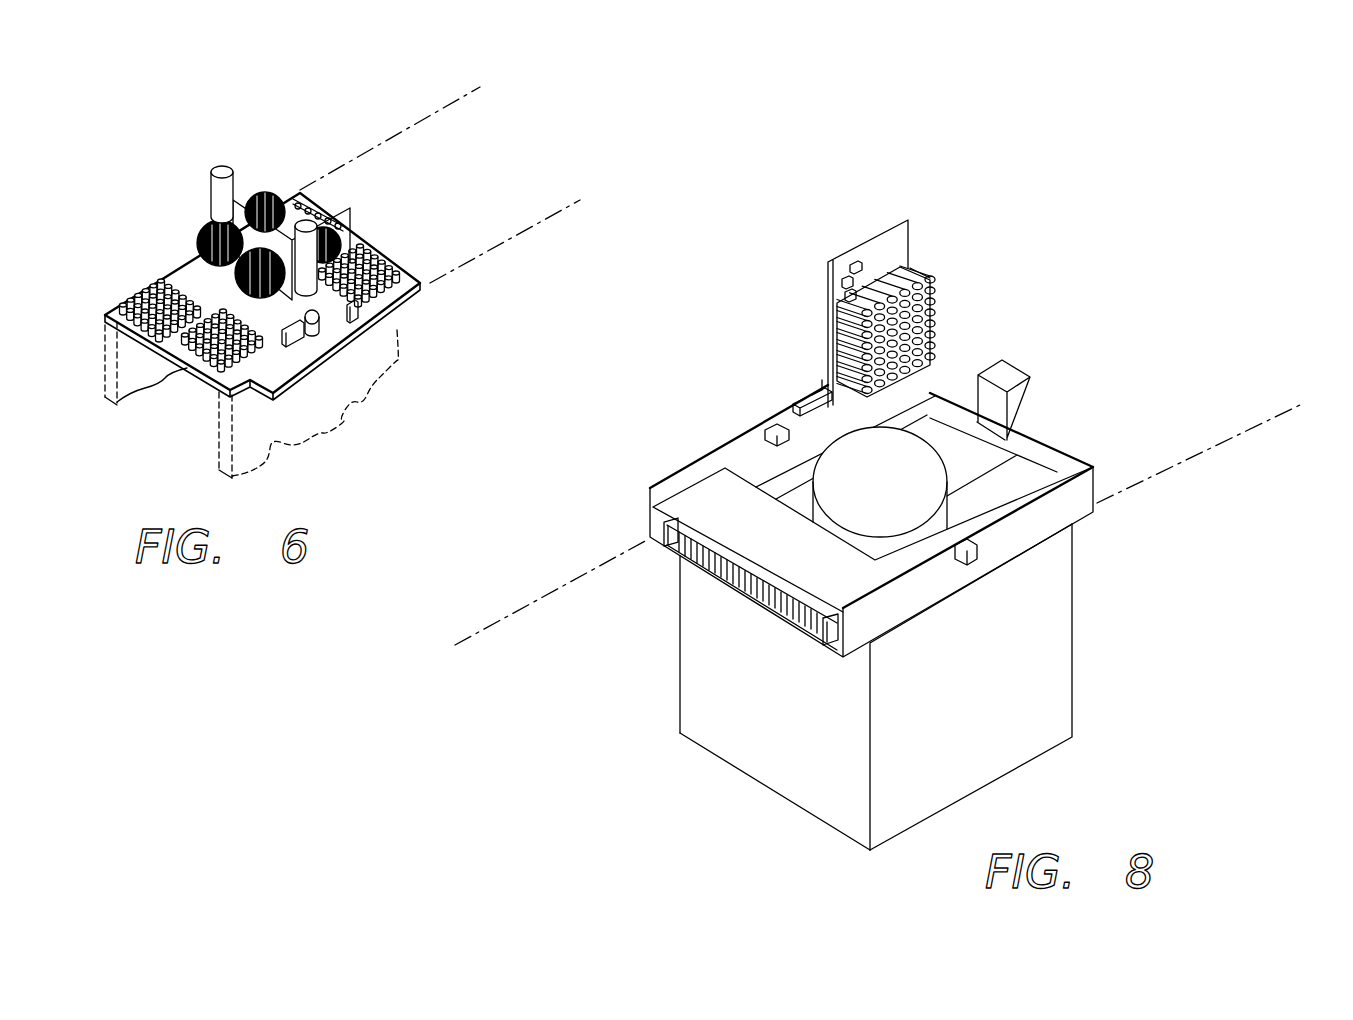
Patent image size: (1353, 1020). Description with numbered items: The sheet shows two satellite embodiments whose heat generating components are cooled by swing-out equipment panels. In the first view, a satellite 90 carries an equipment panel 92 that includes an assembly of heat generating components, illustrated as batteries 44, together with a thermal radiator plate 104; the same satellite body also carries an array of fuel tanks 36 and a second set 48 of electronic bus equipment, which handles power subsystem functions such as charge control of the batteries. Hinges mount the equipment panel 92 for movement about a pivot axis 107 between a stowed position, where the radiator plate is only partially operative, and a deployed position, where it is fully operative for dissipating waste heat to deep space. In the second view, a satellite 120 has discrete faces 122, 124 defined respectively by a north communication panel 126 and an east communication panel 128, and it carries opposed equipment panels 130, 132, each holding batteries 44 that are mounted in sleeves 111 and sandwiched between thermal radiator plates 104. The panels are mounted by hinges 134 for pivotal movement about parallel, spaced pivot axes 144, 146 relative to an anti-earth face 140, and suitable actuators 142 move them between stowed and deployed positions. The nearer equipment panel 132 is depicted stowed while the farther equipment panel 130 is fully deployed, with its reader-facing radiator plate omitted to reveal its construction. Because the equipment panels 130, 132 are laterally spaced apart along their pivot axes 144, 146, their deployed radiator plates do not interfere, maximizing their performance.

In FIG. 6, the array of fuel tanks 36 is at (266, 200).
In FIG. 6, the batteries 44 is at (376, 243).
In FIG. 8, the batteries 44 is at (935, 297).
In FIG. 8, the second set of electronic bus equipment 48 is at (856, 255).
In FIG. 6, the satellite 90 is at (316, 223).
In FIG. 6, the equipment panel 92 is at (124, 290).
In FIG. 6, the thermal radiator plate 104 is at (372, 327).
In FIG. 6, the pivot axis 107 is at (440, 112).
In FIG. 8, the sleeves 111 is at (920, 273).
In FIG. 8, the satellite 120 is at (914, 587).
In FIG. 8, the face 122 is at (1043, 608).
In FIG. 8, the face 124 is at (697, 722).
In FIG. 8, the north communication panel 126 is at (1042, 672).
In FIG. 8, the east communication panel 128 is at (773, 750).
In FIG. 8, the equipment panel 130 is at (920, 245).
In FIG. 8, the equipment panel 132 is at (822, 650).
In FIG. 8, the hinges 134 is at (825, 385).
In FIG. 8, the face 140 is at (839, 591).
In FIG. 8, the actuators 142 is at (805, 407).
In FIG. 8, the pivot axis 144 is at (577, 578).
In FIG. 8, the pivot axis 146 is at (1262, 428).